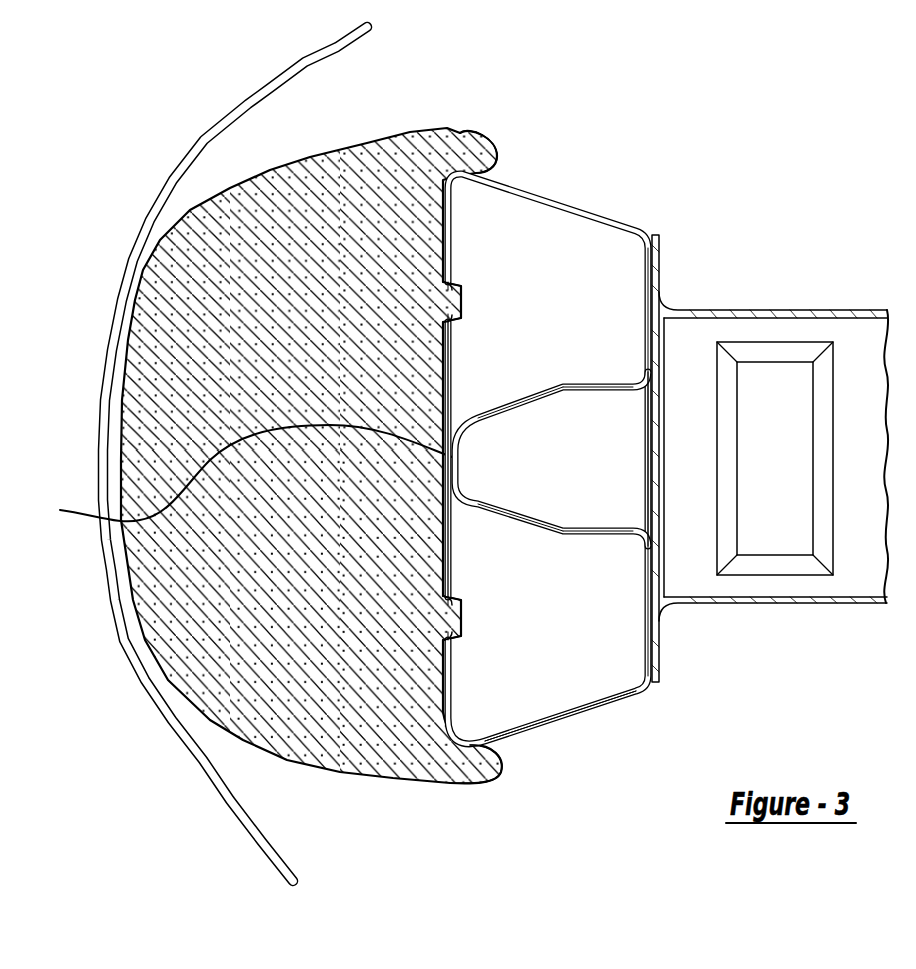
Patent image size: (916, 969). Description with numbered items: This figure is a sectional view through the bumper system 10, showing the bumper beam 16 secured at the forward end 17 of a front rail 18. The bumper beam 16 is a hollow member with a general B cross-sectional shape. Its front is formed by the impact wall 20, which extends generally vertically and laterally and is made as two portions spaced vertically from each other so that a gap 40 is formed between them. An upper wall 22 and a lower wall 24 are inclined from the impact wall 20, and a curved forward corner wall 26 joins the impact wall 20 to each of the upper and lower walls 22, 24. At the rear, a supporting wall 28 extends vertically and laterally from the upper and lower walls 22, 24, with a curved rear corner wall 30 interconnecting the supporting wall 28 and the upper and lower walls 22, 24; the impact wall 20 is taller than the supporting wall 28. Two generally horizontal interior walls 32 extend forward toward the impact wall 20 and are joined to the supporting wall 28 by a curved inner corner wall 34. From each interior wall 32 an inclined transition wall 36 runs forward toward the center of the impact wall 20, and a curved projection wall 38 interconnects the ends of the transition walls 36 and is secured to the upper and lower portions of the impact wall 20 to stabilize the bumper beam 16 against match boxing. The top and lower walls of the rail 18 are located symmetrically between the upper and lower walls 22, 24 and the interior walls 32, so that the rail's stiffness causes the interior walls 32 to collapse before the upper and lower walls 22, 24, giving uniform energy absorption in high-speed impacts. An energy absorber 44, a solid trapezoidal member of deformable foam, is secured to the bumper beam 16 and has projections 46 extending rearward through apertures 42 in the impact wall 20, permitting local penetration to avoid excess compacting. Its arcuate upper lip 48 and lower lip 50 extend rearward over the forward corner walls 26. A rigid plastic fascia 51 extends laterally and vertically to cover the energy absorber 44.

The bumper system 10 is at (748, 117).
The bumper beam 16 is at (606, 713).
The forward end 17 is at (660, 266).
The front rail 18 is at (800, 310).
The impact wall 20 is at (447, 677).
The upper wall 22 is at (562, 205).
The lower wall 24 is at (562, 718).
The forward corner wall 26 is at (463, 152).
The supporting wall 28 is at (660, 604).
The rear corner wall 30 is at (650, 235).
The interior wall 32 is at (598, 385).
The inner corner wall 34 is at (643, 529).
The transition wall 36 is at (517, 403).
The projection wall 38 is at (455, 457).
The gap 40 is at (243, 473).
The aperture 42 is at (447, 278).
The energy absorber 44 is at (325, 202).
The projection 46 is at (466, 283).
The upper lip 48 is at (486, 153).
The lower lip 50 is at (487, 760).
The fascia 51 is at (101, 420).